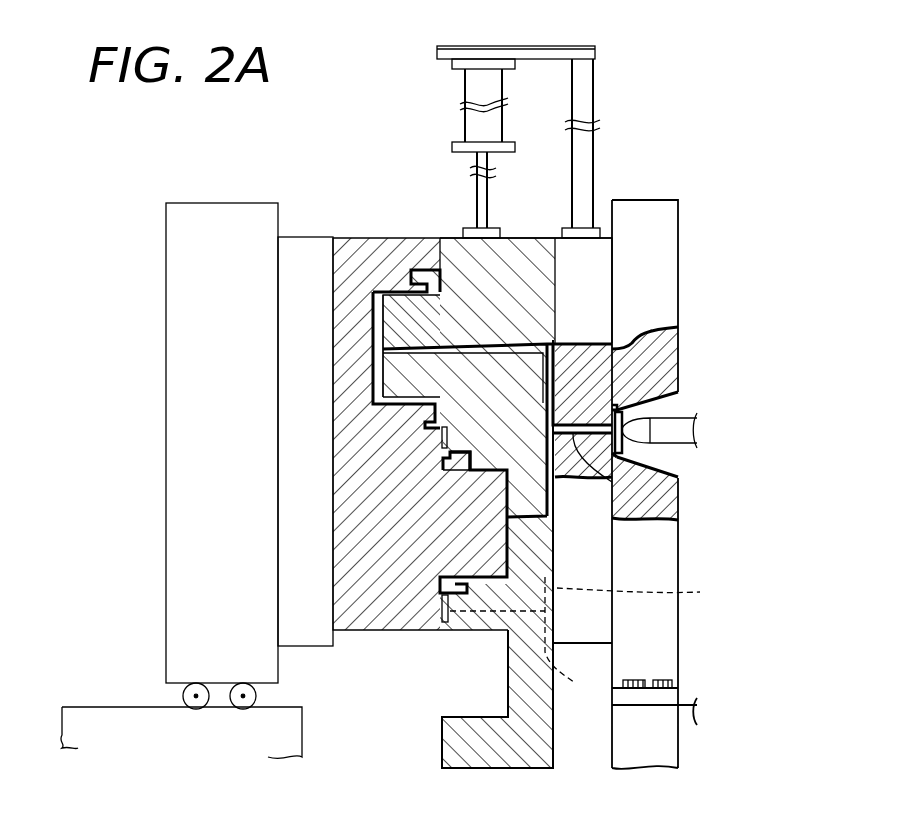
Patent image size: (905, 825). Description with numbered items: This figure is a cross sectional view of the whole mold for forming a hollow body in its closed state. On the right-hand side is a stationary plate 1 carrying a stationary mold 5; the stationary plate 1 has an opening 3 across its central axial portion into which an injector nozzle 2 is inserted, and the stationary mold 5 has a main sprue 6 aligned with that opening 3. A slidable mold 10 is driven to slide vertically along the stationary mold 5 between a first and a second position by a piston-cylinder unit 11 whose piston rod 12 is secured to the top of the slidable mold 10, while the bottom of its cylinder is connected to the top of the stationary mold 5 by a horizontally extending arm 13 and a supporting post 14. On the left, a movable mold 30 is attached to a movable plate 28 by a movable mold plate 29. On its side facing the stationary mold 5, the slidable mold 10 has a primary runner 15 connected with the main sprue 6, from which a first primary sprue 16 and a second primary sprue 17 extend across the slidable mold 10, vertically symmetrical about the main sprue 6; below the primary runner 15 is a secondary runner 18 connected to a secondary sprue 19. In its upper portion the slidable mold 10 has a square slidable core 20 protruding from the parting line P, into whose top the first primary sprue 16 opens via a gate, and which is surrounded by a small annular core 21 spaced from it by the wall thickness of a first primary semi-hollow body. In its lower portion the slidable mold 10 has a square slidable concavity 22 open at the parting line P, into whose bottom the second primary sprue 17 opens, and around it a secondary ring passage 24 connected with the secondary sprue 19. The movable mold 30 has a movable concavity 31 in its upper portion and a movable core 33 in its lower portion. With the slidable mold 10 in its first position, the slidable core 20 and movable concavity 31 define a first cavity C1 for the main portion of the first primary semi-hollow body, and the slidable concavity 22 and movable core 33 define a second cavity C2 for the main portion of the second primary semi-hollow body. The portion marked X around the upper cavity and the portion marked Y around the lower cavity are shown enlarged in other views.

The stationary plate 1 is at (648, 206).
The injector nozzle 2 is at (688, 432).
The opening 3 is at (655, 403).
The stationary mold 5 is at (613, 262).
The main sprue 6 is at (625, 465).
The slidable mold 10 is at (453, 240).
The piston-cylinder unit 11 is at (470, 130).
The piston rod 12 is at (478, 162).
The horizontally extending arm 13 is at (547, 54).
The supporting post 14 is at (590, 142).
The primary runner 15 is at (617, 350).
The first primary sprue 16 is at (520, 340).
The second primary sprue 17 is at (560, 548).
The secondary runner 18 is at (641, 593).
The secondary sprue 19 is at (521, 644).
The slidable core 20 is at (398, 336).
The small annular core 21 is at (440, 281).
The slidable concavity 22 is at (448, 484).
The secondary ring passage 24 is at (440, 612).
The movable plate 28 is at (200, 208).
The movable mold plate 29 is at (313, 245).
The movable mold 30 is at (350, 243).
The movable concavity 31 is at (383, 318).
The movable core 33 is at (470, 512).
The first cavity C1 is at (378, 380).
The second cavity C2 is at (445, 462).
The portion marked X is at (384, 278).
The portion marked Y is at (452, 636).
The parting line P is at (440, 240).